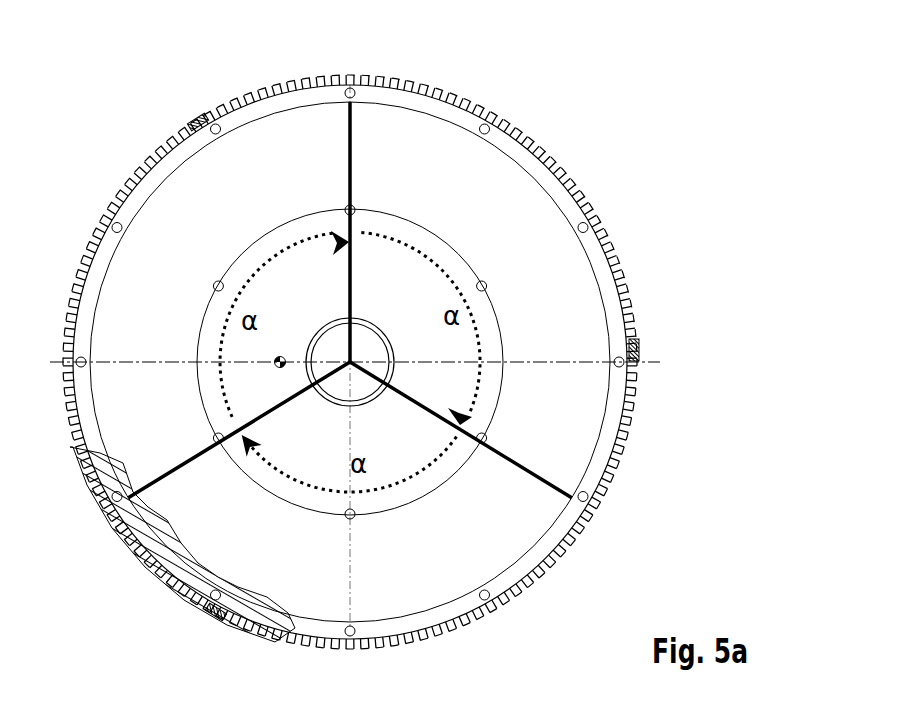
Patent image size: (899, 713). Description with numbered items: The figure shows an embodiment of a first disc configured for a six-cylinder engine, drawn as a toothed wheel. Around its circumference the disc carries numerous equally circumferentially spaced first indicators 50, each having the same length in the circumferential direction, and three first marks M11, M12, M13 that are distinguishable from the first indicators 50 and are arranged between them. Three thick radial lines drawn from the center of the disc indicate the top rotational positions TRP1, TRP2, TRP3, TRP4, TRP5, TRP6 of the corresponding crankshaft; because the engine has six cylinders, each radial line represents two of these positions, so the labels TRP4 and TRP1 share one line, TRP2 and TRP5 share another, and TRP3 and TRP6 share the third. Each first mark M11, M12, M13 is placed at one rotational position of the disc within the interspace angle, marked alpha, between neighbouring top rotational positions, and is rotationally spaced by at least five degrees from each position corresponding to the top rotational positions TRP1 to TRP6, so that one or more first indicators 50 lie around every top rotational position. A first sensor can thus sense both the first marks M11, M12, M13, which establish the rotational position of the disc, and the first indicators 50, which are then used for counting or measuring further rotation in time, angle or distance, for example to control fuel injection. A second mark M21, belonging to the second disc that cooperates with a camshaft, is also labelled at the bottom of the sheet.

The first indicators 50 is at (610, 240).
The first mark M11 is at (640, 348).
The first mark M12 is at (213, 614).
The first mark M13 is at (194, 117).
The second mark M21 is at (432, 712).
The top rotational position TRP1 is at (349, 198).
The top rotational position TRP2 is at (515, 465).
The top rotational position TRP3 is at (188, 465).
The top rotational position TRP4 is at (349, 184).
The top rotational position TRP5 is at (515, 465).
The top rotational position TRP6 is at (188, 465).